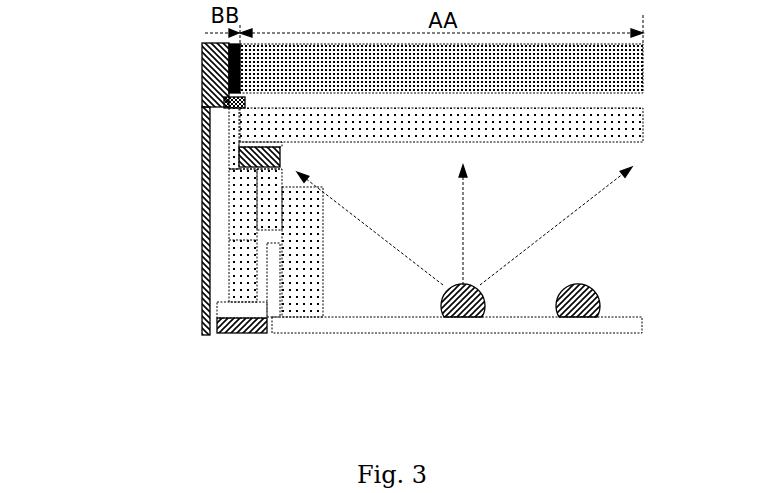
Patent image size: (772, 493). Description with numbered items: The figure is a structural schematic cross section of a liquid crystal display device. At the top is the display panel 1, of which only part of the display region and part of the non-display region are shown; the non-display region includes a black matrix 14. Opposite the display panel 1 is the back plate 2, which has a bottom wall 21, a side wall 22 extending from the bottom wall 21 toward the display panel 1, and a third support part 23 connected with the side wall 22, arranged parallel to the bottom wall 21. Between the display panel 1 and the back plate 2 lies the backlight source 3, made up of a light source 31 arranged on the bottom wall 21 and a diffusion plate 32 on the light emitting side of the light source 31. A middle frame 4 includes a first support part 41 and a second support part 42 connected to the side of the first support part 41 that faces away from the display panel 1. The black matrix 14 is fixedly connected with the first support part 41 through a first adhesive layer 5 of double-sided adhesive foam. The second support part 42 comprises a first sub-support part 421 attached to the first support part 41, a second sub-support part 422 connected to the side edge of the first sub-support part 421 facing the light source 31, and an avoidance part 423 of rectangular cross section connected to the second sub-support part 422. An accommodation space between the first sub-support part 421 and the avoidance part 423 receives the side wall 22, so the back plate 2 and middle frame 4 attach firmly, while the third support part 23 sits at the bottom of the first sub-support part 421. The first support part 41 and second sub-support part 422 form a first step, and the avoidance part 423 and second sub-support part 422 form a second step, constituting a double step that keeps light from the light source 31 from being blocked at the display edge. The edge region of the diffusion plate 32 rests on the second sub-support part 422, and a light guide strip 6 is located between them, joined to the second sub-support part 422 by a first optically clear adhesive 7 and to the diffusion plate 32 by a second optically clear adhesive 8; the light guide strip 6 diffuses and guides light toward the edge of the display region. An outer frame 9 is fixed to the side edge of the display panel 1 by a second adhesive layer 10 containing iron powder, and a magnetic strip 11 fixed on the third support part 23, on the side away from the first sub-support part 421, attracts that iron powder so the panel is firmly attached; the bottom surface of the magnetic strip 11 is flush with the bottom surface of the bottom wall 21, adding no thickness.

The display panel 1 is at (643, 72).
The back plate 2 is at (429, 340).
The backlight source 3 is at (500, 212).
The middle frame 4 is at (153, 205).
The first adhesive layer 5 is at (224, 107).
The light guide strip 6 is at (282, 155).
The first optically clear adhesive 7 is at (229, 168).
The second optically clear adhesive 8 is at (239, 145).
The outer frame 9 is at (202, 268).
The second adhesive layer 10 is at (202, 55).
The magnetic strip 11 is at (217, 325).
The black matrix 14 is at (229, 82).
The bottom wall 21 is at (457, 351).
The side wall 22 is at (273, 300).
The third support part 23 is at (245, 310).
The light source 31 is at (578, 274).
The diffusion plate 32 is at (643, 125).
The first support part 41 is at (232, 127).
The second support part 42 is at (176, 235).
The first sub-support part 421 is at (262, 213).
The second sub-support part 422 is at (235, 188).
The avoidance part 423 is at (257, 240).